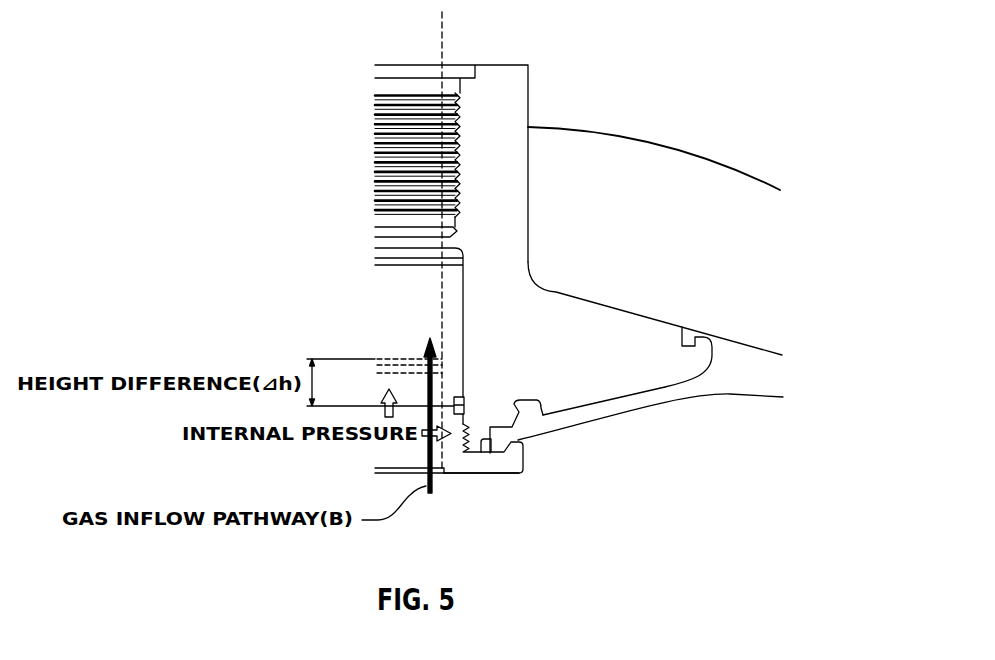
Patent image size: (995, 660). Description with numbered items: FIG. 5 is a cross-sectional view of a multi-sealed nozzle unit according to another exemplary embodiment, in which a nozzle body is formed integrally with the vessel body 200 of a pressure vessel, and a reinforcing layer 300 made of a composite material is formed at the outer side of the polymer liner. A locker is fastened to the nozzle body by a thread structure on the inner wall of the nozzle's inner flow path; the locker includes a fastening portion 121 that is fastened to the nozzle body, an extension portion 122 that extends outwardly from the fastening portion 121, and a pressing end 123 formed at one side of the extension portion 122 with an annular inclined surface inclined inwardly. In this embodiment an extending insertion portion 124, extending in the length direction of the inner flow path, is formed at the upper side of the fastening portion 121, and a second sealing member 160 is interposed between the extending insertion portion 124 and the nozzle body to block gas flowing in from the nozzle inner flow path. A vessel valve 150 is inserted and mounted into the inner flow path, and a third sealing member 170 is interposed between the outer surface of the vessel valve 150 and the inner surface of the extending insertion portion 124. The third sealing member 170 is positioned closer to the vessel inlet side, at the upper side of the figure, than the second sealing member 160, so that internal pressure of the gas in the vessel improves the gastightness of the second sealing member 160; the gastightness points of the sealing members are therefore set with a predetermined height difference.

The vessel valve 150 is at (441, 43).
The reinforcing layer 300 is at (658, 158).
The vessel body 200 is at (740, 355).
The extending insertion portion 124 is at (464, 308).
The third sealing member 170 is at (392, 365).
The second sealing member 160 is at (465, 411).
The fastening portion 121 is at (484, 455).
The extension portion 122 is at (506, 474).
The pressing end 123 is at (527, 453).